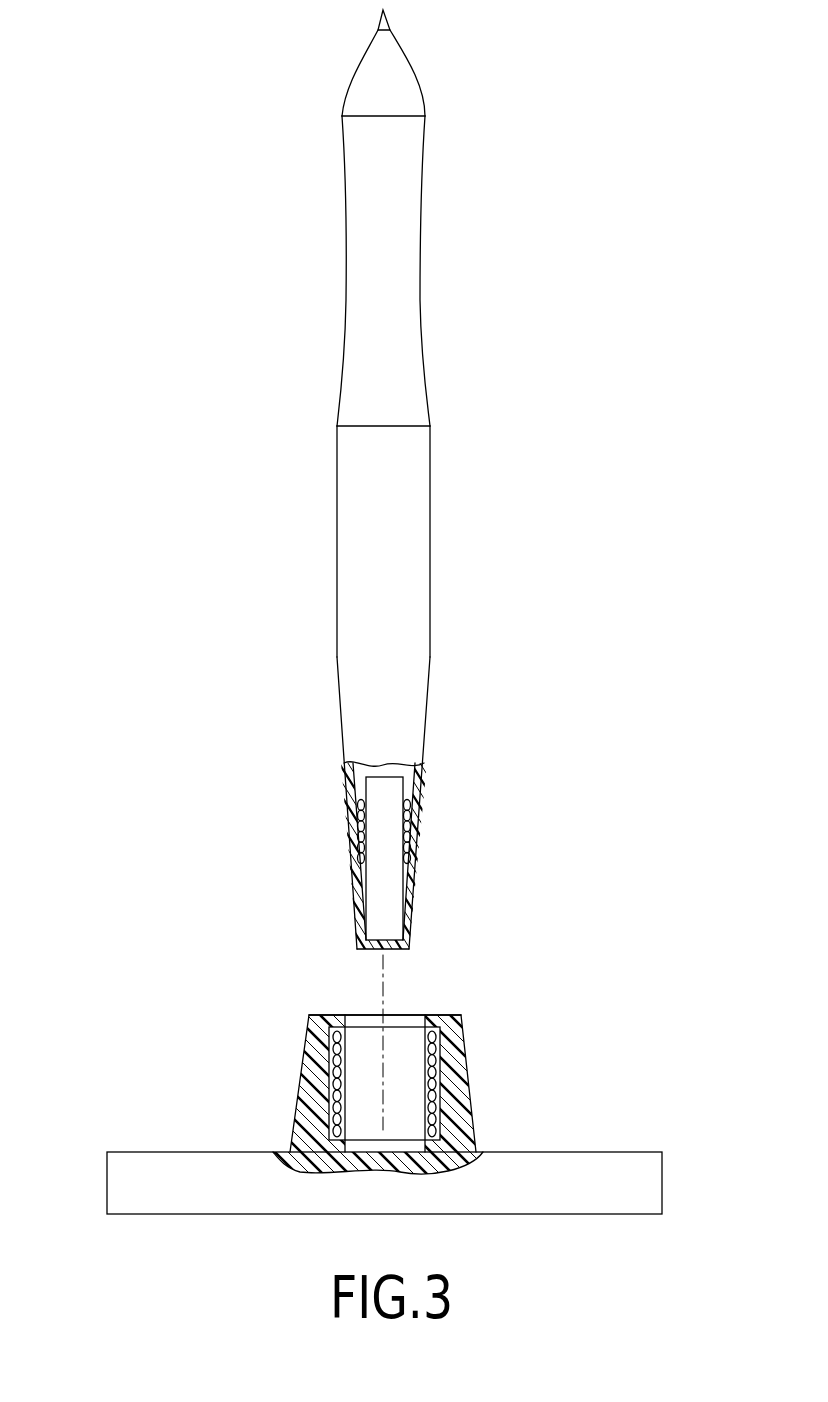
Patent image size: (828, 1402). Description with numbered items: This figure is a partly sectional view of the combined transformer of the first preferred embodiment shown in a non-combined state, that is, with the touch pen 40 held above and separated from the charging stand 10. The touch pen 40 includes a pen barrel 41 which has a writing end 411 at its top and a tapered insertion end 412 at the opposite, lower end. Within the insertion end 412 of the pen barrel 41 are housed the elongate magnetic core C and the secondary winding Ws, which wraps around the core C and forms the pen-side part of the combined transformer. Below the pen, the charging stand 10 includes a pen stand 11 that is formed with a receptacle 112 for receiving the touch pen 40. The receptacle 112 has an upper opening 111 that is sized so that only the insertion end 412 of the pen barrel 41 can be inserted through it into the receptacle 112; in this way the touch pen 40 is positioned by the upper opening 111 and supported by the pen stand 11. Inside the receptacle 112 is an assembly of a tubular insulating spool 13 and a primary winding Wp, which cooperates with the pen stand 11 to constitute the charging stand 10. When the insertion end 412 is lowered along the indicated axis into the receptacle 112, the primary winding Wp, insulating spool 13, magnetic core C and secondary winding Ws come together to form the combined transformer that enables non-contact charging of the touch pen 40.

The touch pen 40 is at (388, 481).
The writing end 411 is at (390, 46).
The pen barrel 41 is at (418, 456).
The tapered insertion end 412 is at (422, 820).
The elongate magnetic core C is at (383, 792).
The secondary winding Ws is at (410, 851).
The charging stand 10 is at (137, 1112).
The pen stand 11 is at (396, 1068).
The upper opening 111 is at (362, 1020).
The receptacle 112 is at (370, 1100).
The tubular insulating spool 13 is at (425, 1048).
The primary winding Wp is at (437, 1070).